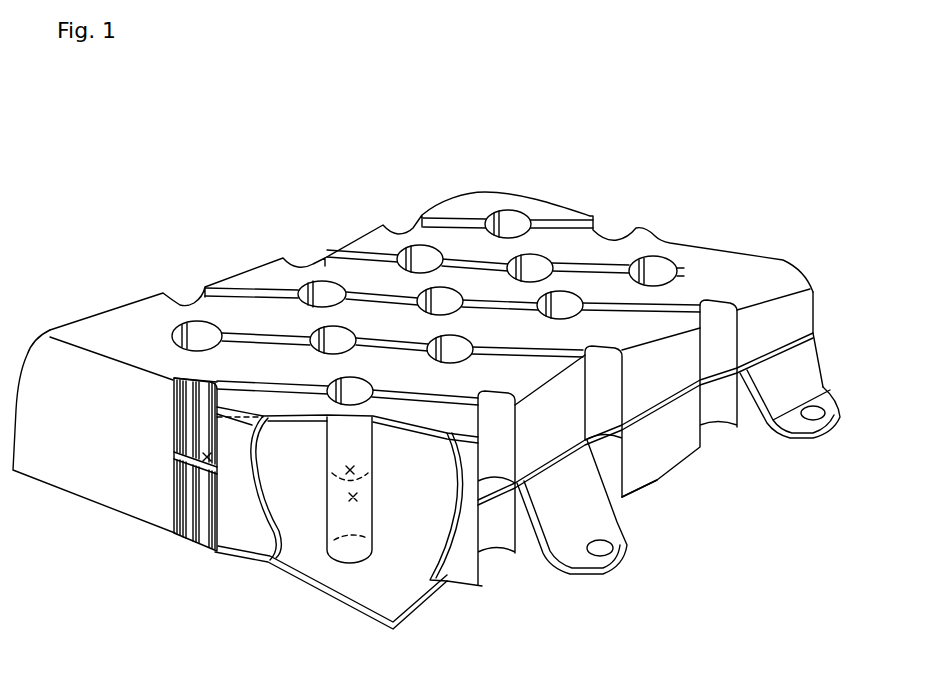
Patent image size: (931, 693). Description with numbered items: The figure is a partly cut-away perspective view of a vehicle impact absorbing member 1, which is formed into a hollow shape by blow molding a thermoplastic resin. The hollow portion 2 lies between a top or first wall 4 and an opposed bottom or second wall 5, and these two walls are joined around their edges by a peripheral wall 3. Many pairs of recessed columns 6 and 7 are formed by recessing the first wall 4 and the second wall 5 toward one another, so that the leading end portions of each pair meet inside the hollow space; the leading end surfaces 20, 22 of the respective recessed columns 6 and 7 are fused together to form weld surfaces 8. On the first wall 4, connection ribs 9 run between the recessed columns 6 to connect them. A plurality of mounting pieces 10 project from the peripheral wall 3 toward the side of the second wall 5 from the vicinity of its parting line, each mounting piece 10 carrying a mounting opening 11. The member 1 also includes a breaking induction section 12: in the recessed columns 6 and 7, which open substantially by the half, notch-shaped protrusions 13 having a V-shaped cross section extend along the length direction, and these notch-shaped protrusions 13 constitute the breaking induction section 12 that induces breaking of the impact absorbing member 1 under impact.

The impact absorbing member 1 is at (255, 200).
The hollow portion 2 is at (385, 570).
The peripheral wall 3 is at (80, 457).
The first wall 4 is at (719, 268).
The second wall 5 is at (655, 482).
The recessed column 6 is at (316, 282).
The recessed column 7 is at (175, 520).
The weld surface 8 is at (175, 513).
The connection rib 9 is at (462, 257).
The mounting piece 10 is at (593, 510).
The mounting opening 11 is at (617, 567).
The breaking induction section 12 is at (192, 546).
The notch-shaped protrusion 13 is at (173, 380).
The leading end surface 20 is at (207, 457).
The leading end surface 22 is at (213, 488).